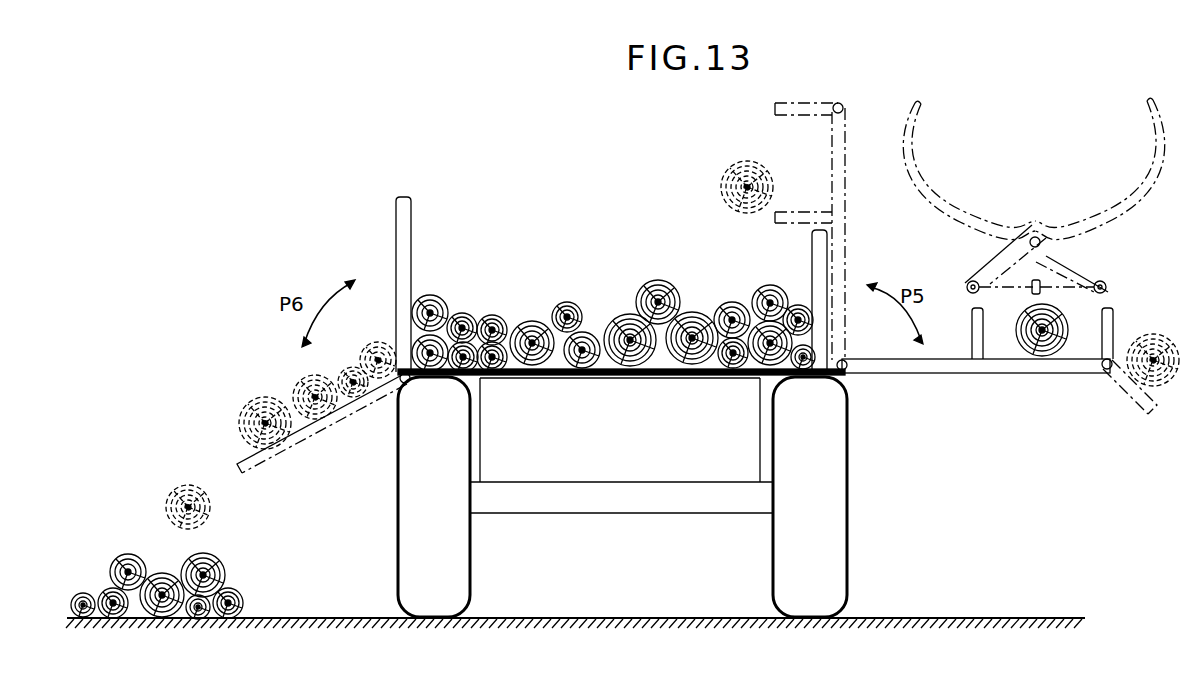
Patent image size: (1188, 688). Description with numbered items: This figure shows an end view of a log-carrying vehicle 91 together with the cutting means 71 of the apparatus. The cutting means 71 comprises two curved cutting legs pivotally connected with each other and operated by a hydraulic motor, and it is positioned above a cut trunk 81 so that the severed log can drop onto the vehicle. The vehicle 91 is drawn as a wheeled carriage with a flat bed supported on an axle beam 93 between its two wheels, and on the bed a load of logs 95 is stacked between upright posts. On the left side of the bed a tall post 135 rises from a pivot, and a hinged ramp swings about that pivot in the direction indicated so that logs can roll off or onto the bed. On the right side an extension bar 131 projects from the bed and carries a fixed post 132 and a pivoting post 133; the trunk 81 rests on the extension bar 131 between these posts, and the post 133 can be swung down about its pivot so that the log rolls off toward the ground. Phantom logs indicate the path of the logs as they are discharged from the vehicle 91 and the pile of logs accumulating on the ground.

The means for cutting the treated tree trunk 71 is at (1033, 157).
The trunk 81 is at (1040, 357).
The vehicle 91 is at (621, 582).
The axle beam 93 is at (540, 500).
The logs on bed 95 is at (616, 375).
The extension bar 131 is at (918, 366).
The post 132 is at (975, 338).
The pivoting post 133 is at (1112, 318).
The post 135 is at (397, 233).